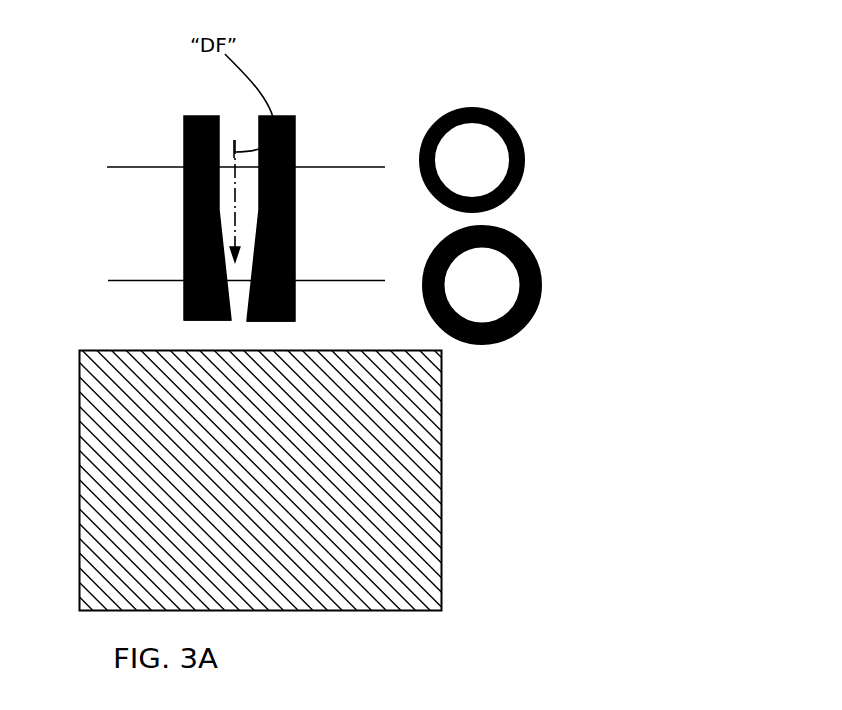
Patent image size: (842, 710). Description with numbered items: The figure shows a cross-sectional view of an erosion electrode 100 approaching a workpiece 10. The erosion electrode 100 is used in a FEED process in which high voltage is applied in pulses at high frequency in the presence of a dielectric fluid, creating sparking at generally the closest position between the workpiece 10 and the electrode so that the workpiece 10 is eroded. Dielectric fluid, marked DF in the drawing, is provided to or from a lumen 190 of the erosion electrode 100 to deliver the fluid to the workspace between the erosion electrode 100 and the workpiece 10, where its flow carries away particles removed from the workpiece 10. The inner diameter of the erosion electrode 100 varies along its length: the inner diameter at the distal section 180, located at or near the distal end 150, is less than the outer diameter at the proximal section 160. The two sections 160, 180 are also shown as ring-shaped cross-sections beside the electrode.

The workpiece 10 is at (92, 445).
The erosion electrode 100 is at (182, 196).
The distal end 150 is at (182, 318).
The proximal section 160 is at (130, 167).
The distal section 180 is at (147, 281).
The lumen 190 is at (246, 201).